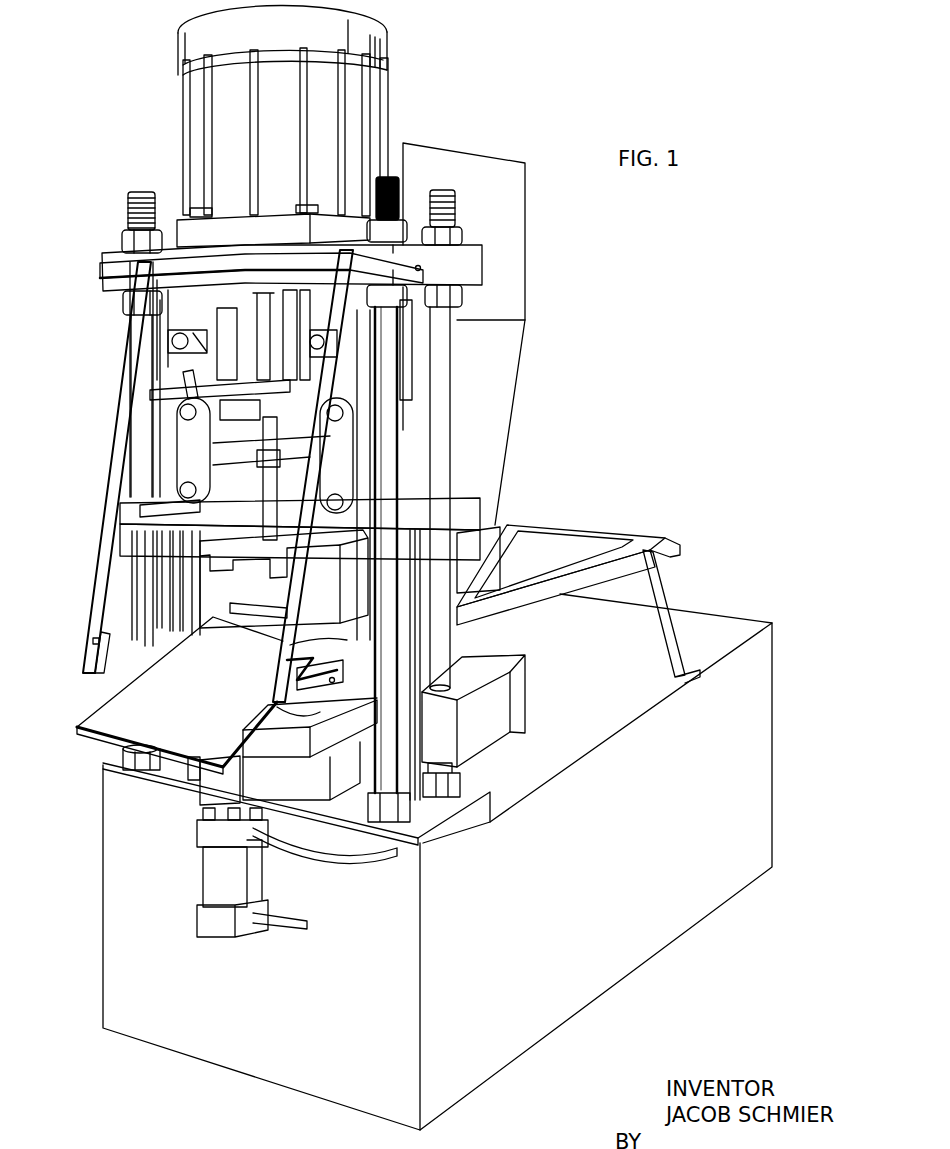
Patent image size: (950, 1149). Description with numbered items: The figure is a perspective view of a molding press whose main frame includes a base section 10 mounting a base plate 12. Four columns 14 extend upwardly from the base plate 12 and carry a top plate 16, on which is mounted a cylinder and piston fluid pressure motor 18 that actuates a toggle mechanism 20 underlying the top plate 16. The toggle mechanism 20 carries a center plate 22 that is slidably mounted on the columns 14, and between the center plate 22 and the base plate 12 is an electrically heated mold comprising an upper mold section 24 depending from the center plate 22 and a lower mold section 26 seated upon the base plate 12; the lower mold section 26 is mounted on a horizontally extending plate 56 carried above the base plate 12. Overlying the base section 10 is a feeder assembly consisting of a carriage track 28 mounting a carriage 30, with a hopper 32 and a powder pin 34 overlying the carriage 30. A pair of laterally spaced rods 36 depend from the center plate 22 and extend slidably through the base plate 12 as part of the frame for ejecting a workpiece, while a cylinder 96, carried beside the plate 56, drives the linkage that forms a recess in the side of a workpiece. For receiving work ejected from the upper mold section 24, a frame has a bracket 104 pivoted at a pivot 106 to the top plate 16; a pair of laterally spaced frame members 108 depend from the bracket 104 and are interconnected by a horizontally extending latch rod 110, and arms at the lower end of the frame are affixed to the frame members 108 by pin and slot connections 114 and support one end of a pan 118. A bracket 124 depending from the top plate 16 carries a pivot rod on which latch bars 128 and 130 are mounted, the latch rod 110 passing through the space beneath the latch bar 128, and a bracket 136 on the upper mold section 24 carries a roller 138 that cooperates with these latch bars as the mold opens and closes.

The base section 10 is at (622, 880).
The base plate 12 is at (437, 812).
The columns 14 is at (452, 445).
The top plate 16 is at (473, 268).
The cylinder and piston fluid pressure motor 18 is at (291, 150).
The toggle mechanism 20 is at (183, 442).
The center plate 22 is at (473, 517).
The upper mold section 24 is at (283, 645).
The lower mold section 26 is at (287, 707).
The carriage track 28 is at (563, 597).
The carriage 30 is at (590, 543).
The hopper 32 is at (514, 203).
The powder pin 34 is at (494, 583).
The rods 36 is at (167, 573).
The plate 56 is at (323, 742).
The cylinder 96 is at (208, 875).
The bracket 104 is at (100, 272).
The pivot 106 is at (422, 270).
The frame members 108 is at (318, 483).
The latch rod 110 is at (160, 411).
The pin and slot connections 114 is at (92, 640).
The pan 118 is at (103, 703).
The bracket 124 is at (247, 307).
The latch bar 128 is at (220, 372).
The latch bar 130 is at (260, 387).
The bracket 136 is at (140, 510).
The roller 138 is at (273, 462).